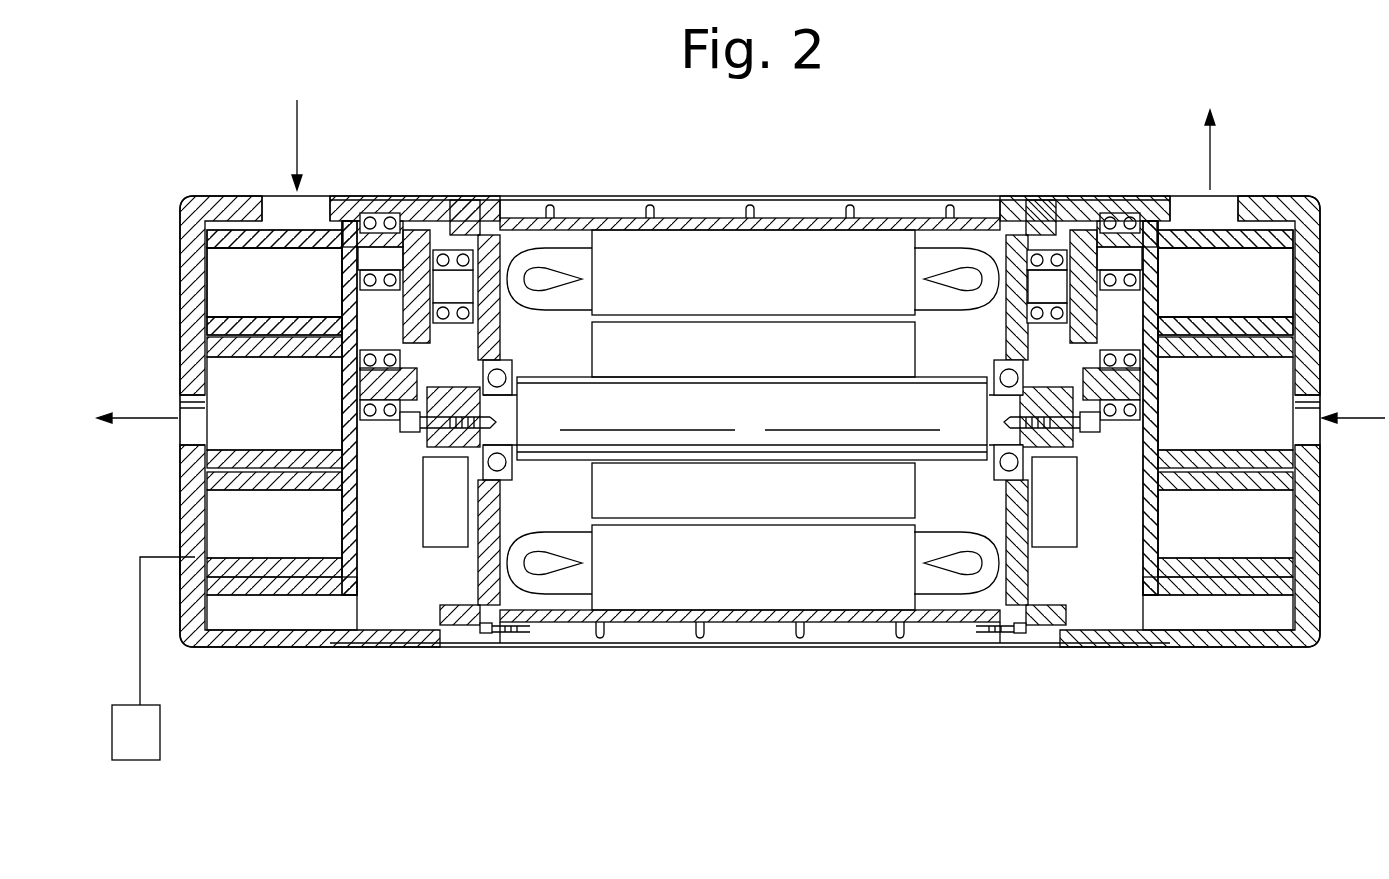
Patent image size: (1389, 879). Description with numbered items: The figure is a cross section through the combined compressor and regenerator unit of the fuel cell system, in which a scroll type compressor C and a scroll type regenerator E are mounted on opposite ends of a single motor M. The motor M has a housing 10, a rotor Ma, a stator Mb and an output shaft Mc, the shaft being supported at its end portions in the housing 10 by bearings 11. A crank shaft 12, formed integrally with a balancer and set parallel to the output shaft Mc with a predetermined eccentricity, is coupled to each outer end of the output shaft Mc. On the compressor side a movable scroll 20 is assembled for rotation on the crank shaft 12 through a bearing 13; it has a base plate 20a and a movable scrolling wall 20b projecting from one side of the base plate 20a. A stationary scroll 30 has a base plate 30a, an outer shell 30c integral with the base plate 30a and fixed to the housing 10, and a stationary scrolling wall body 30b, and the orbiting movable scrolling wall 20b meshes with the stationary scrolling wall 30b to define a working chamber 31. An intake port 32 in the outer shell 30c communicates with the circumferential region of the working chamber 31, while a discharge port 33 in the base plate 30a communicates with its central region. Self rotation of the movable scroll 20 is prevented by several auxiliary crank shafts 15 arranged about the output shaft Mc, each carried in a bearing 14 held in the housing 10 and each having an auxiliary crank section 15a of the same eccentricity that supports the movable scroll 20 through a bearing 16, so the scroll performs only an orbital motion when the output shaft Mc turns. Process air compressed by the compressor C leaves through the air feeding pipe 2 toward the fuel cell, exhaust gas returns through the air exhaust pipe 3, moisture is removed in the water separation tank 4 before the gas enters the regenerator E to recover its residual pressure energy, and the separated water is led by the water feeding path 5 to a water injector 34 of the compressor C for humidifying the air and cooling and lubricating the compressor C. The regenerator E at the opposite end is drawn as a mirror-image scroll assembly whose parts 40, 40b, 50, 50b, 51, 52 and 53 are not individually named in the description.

The compressor C is at (155, 205).
The regenerator E is at (1325, 180).
The motor M is at (752, 190).
The rotor Ma is at (683, 350).
The stator Mb is at (786, 253).
The output shaft Mc is at (838, 400).
The air feeding pipe 2 is at (135, 430).
The air exhaust pipe 3 is at (1360, 412).
The water separation tank 4 is at (160, 745).
The water feeding path 5 is at (138, 625).
The housing 10 is at (456, 212).
The bearings 11 is at (517, 367).
The crank shaft 12 is at (362, 382).
The bearing 13 is at (362, 414).
The bearing 14 is at (428, 315).
The auxiliary crank shaft 15 is at (462, 288).
The auxiliary crank section 15a is at (380, 258).
The bearing 16 is at (375, 218).
The movable scroll 20 is at (322, 650).
The base plate 20a is at (357, 545).
The movable scrolling wall 20b is at (242, 487).
The stationary scroll 30 is at (228, 203).
The base plate 30a is at (245, 322).
The stationary scrolling wall body 30b is at (215, 263).
The outer shell 30c is at (252, 650).
The working chamber 31 is at (254, 416).
The intake port 32 is at (275, 202).
The discharge port 33 is at (200, 400).
The water injector 34 is at (195, 552).
The brake armature 40 is at (1185, 600).
The brake coil 40b is at (1252, 483).
The brake housing 50 is at (1265, 205).
The coil 50b is at (1255, 326).
The field block 51 is at (1242, 416).
The shaft opening 52 is at (1322, 426).
The recess 53 is at (1182, 202).